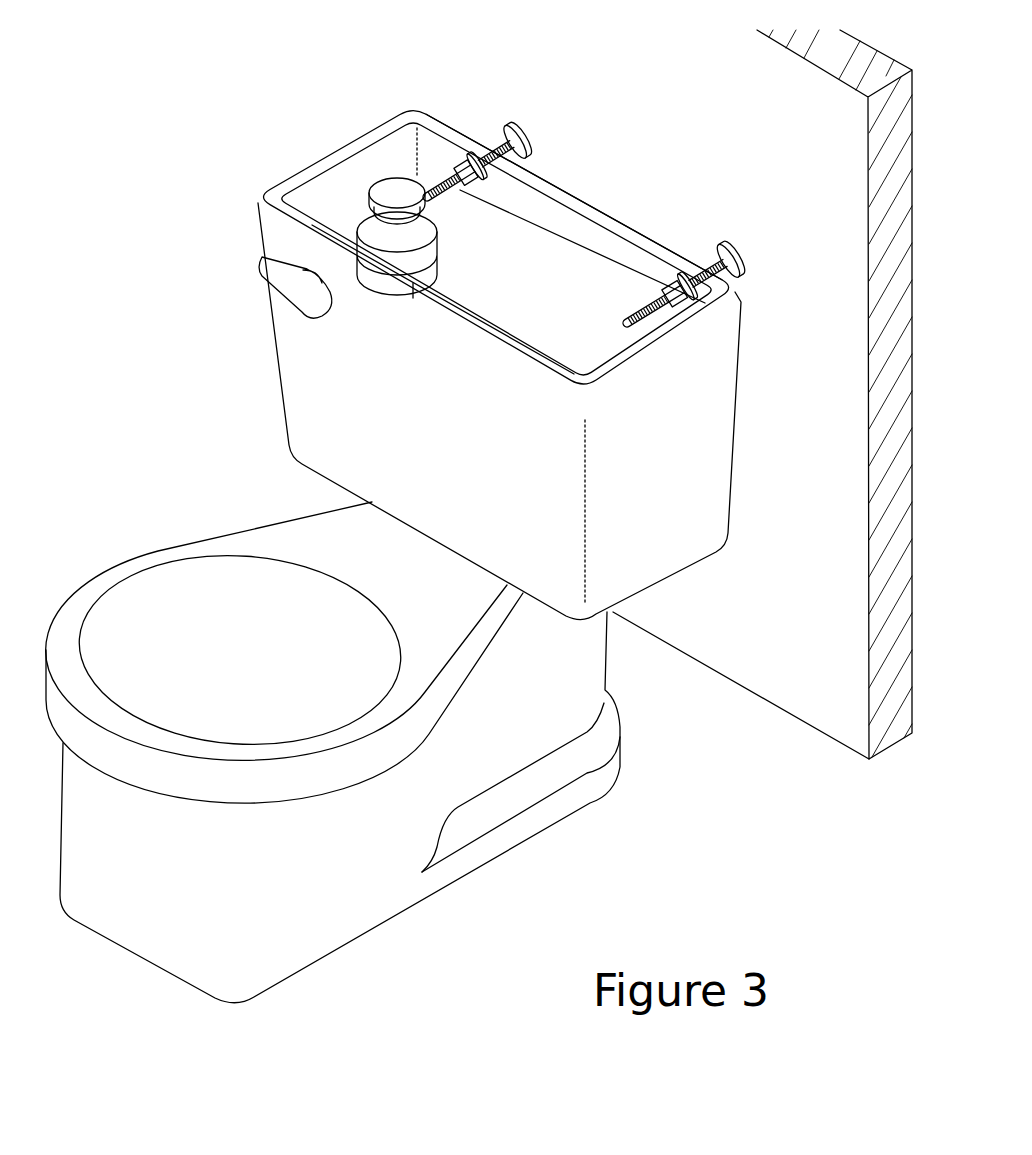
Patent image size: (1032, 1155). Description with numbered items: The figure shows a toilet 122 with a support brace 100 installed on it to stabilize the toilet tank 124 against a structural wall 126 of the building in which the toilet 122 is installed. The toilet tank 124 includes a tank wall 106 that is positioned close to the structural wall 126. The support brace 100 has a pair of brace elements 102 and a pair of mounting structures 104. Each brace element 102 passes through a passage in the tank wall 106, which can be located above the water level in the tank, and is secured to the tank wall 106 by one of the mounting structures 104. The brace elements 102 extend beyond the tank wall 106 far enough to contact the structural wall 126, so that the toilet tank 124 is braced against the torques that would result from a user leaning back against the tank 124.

The support brace 100 is at (579, 174).
The brace element 102 is at (536, 117).
The mounting structure 104 is at (501, 168).
The tank wall 106 is at (626, 207).
The toilet 122 is at (180, 453).
The toilet tank 124 is at (255, 349).
The structural wall 126 is at (823, 657).